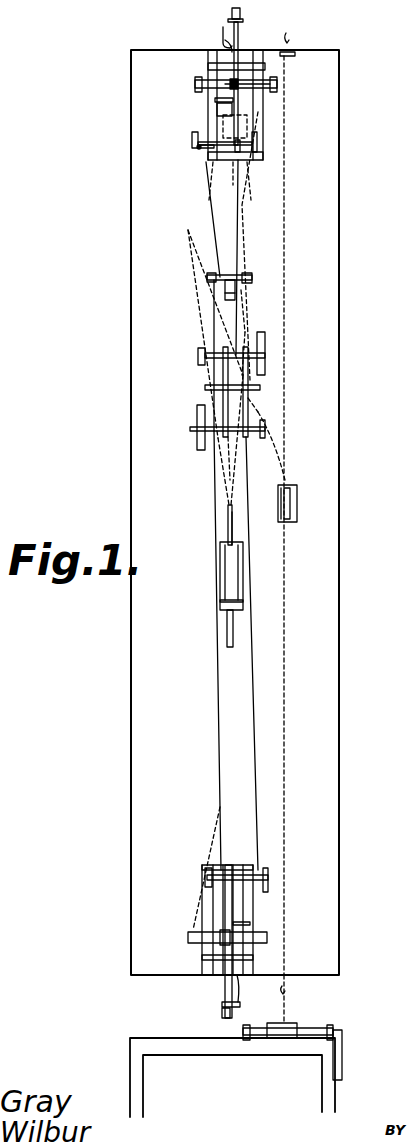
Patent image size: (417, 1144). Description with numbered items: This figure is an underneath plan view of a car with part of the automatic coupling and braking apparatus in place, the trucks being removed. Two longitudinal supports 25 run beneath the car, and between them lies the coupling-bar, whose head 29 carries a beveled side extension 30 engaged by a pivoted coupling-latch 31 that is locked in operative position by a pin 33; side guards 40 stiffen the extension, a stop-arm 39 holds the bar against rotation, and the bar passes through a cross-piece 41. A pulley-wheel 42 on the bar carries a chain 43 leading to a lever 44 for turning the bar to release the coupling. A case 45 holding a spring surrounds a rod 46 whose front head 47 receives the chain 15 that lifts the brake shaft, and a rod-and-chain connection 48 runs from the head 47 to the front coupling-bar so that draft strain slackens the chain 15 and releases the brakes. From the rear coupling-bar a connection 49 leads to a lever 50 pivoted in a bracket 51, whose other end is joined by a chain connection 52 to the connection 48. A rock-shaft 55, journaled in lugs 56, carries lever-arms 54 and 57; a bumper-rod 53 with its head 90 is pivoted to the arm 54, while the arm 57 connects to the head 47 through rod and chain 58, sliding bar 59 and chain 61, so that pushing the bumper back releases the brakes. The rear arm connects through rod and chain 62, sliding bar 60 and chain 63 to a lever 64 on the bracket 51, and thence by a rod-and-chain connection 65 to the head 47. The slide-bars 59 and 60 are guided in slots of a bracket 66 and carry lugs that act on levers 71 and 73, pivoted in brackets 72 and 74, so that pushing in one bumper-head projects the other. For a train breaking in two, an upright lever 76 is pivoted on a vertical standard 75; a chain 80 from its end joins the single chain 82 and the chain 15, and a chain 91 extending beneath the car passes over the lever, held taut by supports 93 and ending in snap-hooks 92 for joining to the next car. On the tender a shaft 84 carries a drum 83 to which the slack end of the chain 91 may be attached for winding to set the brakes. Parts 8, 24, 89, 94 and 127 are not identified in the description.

The support strip 8 is at (342, 1058).
The chain 15 is at (223, 468).
The block 24 is at (224, 109).
The supports 25 is at (239, 125).
The head 29 is at (238, 28).
The side extension 30 is at (222, 33).
The coupling-latch 31 is at (240, 10).
The pin 33 is at (235, 173).
The stop-arm 39 is at (214, 100).
The side guards 40 is at (224, 42).
The cross-piece 41 is at (207, 77).
The pulley-wheel 42 is at (229, 86).
The chain 43 is at (194, 84).
The lever 44 is at (194, 80).
The case 45 is at (219, 580).
The rod 46 is at (233, 524).
The head 47 is at (227, 512).
The connection 48 is at (238, 250).
The connection 49 is at (226, 575).
The lever 50 is at (222, 274).
The bracket 51 is at (235, 291).
The chain connection 52 is at (246, 310).
The bumper-rod 53 is at (222, 125).
The lever-arm 54 is at (210, 146).
The rock-shaft 55 is at (204, 148).
The brackets or lugs 56 is at (258, 140).
The lever-arm 57 is at (197, 148).
The rod and chain 58 is at (213, 222).
The sliding bar 59 is at (222, 368).
The sliding bar 60 is at (249, 400).
The chain 61 is at (232, 445).
The rod and chain 62 is at (252, 672).
The chain 63 is at (254, 345).
The lever 64 is at (252, 276).
The rod-and-chain connection 65 is at (210, 325).
The bracket 66 is at (260, 388).
The lever 71 is at (243, 353).
The bracket or support 72 is at (197, 358).
The lever 73 is at (223, 427).
The bracket or support 74 is at (268, 424).
The vertical standard 75 is at (297, 500).
The upright lever 76 is at (280, 508).
The chain 80 is at (285, 478).
The single chain 82 is at (245, 378).
The drum 83 is at (290, 1022).
The shaft or spindle 84 is at (315, 1027).
The cross bar 89 is at (243, 67).
The head 90 is at (243, 21).
The chain 91 is at (283, 318).
The snap-hooks 92 is at (285, 990).
The support 93 is at (291, 37).
The cord 94 is at (260, 100).
The block 127 is at (231, 146).